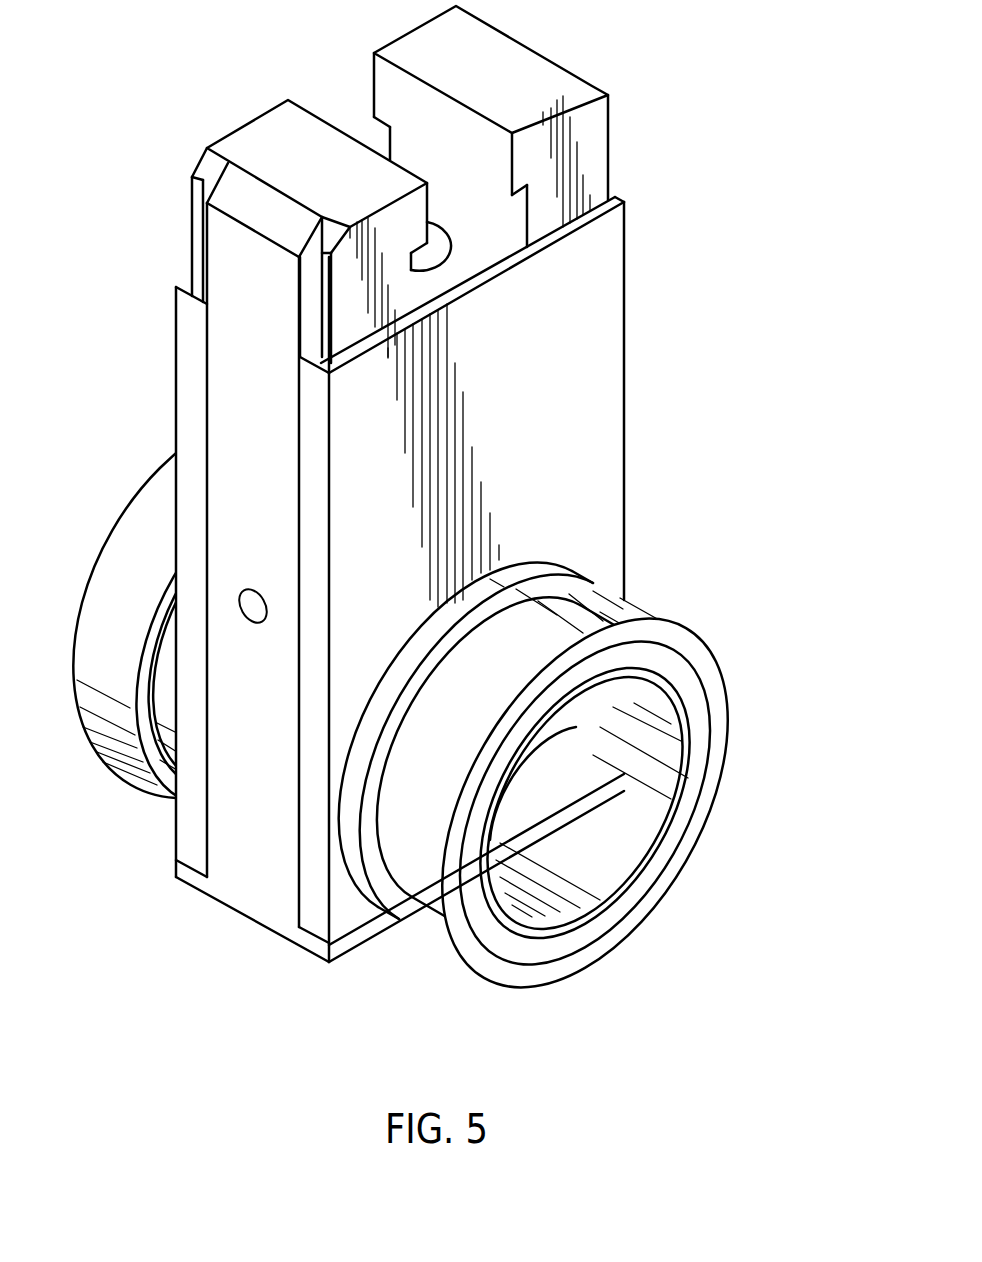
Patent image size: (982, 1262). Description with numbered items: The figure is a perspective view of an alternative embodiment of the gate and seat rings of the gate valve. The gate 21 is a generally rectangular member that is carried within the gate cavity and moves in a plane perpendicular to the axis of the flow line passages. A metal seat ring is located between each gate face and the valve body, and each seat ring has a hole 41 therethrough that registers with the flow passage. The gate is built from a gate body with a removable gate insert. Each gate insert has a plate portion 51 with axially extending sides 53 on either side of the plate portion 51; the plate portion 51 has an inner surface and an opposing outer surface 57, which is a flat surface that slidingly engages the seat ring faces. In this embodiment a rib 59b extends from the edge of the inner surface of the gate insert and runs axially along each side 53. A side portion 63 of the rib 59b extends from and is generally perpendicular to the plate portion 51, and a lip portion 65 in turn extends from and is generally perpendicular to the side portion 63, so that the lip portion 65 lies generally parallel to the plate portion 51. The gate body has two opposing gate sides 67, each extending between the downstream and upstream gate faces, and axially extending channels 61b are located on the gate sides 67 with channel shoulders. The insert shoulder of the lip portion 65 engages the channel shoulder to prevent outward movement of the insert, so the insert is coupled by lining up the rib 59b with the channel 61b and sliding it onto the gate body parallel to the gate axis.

The gate 21 is at (594, 176).
The holes 41 is at (645, 788).
The plate portion 51 is at (603, 298).
The axially extending sides 53 is at (313, 504).
The outer surface 57 is at (557, 414).
The rib 59b is at (187, 277).
The axially extending channels 61b is at (210, 186).
The side portion 63 is at (313, 877).
The lip portion 65 is at (317, 350).
The gate sides 67 is at (267, 308).